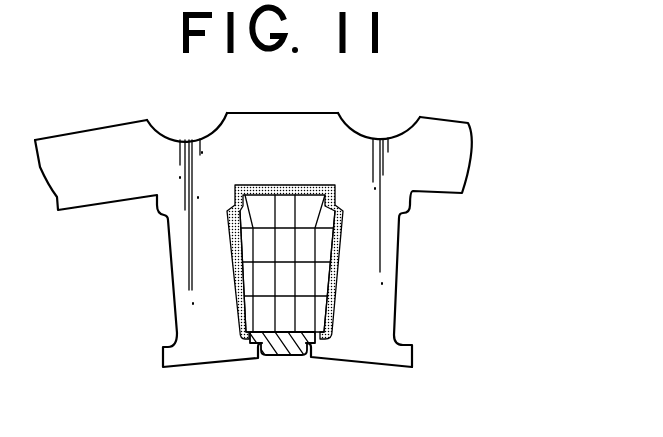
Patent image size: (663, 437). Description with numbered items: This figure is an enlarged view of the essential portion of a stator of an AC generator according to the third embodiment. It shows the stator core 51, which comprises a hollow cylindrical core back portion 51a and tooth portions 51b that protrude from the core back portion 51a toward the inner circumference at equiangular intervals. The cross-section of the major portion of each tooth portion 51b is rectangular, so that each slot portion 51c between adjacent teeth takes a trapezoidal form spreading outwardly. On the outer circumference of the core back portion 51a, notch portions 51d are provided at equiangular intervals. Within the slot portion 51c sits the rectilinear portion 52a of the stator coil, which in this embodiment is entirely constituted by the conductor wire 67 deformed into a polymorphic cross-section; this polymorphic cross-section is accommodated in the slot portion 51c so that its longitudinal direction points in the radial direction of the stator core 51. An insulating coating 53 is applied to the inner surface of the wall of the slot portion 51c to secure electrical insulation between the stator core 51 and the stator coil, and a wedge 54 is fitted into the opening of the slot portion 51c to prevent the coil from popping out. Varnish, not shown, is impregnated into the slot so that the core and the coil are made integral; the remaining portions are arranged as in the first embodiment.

The stator core 51 is at (482, 138).
The core back portion 51a is at (437, 173).
The tooth portion 51b is at (382, 232).
The slot portion 51c is at (410, 280).
The notch portion 51d is at (391, 127).
The rectilinear portion 52a is at (241, 223).
The insulating coating 53 is at (241, 320).
The wedge 54 is at (291, 353).
The conductor wire 67 is at (267, 248).